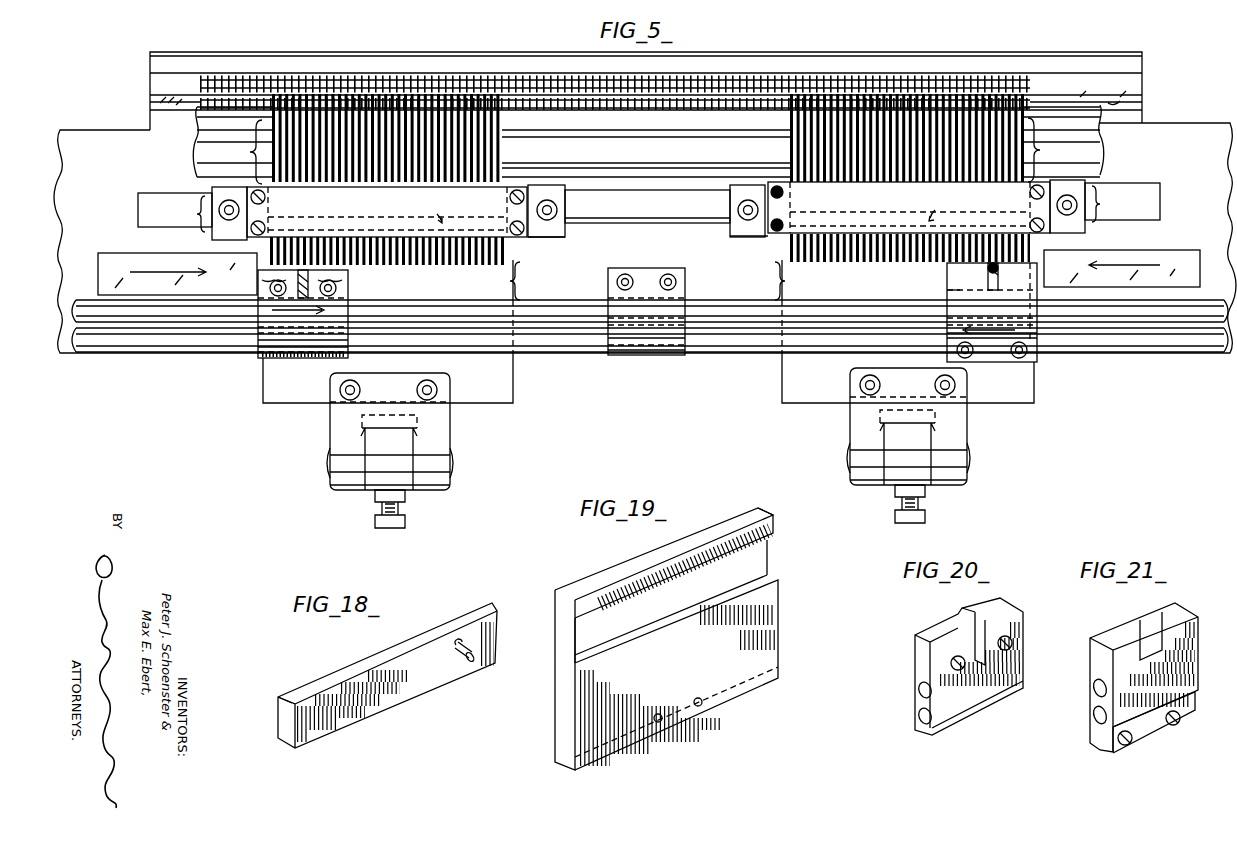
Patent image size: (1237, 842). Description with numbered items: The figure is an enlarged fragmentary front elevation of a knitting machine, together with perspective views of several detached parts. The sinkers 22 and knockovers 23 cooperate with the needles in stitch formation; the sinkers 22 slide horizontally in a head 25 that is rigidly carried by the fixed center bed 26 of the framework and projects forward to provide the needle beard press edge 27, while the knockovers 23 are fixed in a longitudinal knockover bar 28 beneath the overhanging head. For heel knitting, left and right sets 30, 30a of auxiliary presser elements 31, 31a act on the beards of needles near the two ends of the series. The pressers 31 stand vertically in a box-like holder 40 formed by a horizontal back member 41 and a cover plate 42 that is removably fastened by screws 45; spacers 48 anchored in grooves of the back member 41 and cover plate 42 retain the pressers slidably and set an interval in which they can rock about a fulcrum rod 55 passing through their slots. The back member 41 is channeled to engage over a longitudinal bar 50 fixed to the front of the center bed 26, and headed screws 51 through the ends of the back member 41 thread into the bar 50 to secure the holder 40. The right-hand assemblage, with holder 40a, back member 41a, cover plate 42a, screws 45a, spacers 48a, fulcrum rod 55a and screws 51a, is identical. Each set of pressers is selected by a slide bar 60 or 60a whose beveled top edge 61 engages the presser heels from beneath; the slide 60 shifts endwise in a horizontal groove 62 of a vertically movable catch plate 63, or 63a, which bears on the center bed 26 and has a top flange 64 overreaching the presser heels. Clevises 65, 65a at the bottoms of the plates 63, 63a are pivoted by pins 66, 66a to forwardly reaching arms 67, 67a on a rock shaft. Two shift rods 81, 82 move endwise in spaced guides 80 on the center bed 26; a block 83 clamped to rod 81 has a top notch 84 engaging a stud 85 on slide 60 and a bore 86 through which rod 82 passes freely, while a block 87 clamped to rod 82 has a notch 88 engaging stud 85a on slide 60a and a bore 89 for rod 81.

In FIG. 5, the sinkers 22 is at (374, 76).
In FIG. 5, the knockovers 23 is at (666, 113).
In FIG. 5, the head 25 is at (528, 54).
In FIG. 5, the center bed 26 is at (112, 130).
In FIG. 5, the needle beard press edge 27 is at (646, 109).
In FIG. 5, the knockover bar 28 is at (646, 153).
In FIG. 5, the left set of auxiliary presser elements 30 is at (232, 145).
In FIG. 5, the right set of auxiliary presser elements 30a is at (1064, 143).
In FIG. 5, the auxiliary presser element 31 is at (500, 166).
In FIG. 5, the auxiliary presser element 31a is at (790, 166).
In FIG. 5, the holder 40 is at (175, 212).
In FIG. 5, the holder 40a is at (1122, 202).
In FIG. 5, the back member 41 is at (566, 228).
In FIG. 5, the back member 41a is at (732, 228).
In FIG. 5, the cover plate 42 is at (387, 212).
In FIG. 5, the cover plate 42a is at (909, 207).
In FIG. 5, the screws 45 is at (264, 226).
In FIG. 5, the screws 45a is at (1030, 222).
In FIG. 5, the spacers 48 is at (270, 261).
In FIG. 5, the spacers 48a is at (1030, 261).
In FIG. 5, the longitudinal bar 50 is at (634, 223).
In FIG. 5, the headed screws 51 is at (228, 200).
In FIG. 5, the headed screws 51a is at (730, 210).
In FIG. 5, the fulcrum rod 55 is at (438, 208).
In FIG. 5, the fulcrum rod 55a is at (952, 206).
In FIG. 5, the slide bar 60 is at (120, 253).
In FIG. 18, the slide bar 60 is at (416, 690).
In FIG. 5, the slide bar 60a is at (1190, 250).
In FIG. 18, the beveled top edge 61 is at (290, 694).
In FIG. 5, the horizontal groove 62 is at (647, 307).
In FIG. 19, the horizontal groove 62 is at (787, 540).
In FIG. 5, the plate 63 is at (515, 392).
In FIG. 19, the plate 63 is at (795, 580).
In FIG. 5, the plate 63a is at (782, 391).
In FIG. 19, the flange 64 is at (774, 515).
In FIG. 5, the clevis 65 is at (330, 432).
In FIG. 5, the clevis 65a is at (967, 428).
In FIG. 5, the pin 66 is at (330, 462).
In FIG. 5, the pin 66a is at (967, 457).
In FIG. 5, the arm 67 is at (384, 474).
In FIG. 5, the arm 67a is at (905, 472).
In FIG. 5, the guides 80 is at (642, 355).
In FIG. 5, the shift rod 81 is at (586, 300).
In FIG. 5, the shift rod 82 is at (588, 342).
In FIG. 5, the block 83 is at (260, 346).
In FIG. 20, the block 83 is at (905, 696).
In FIG. 5, the notch 84 is at (258, 280).
In FIG. 20, the notch 84 is at (964, 618).
In FIG. 5, the stud 85 is at (321, 276).
In FIG. 18, the stud 85 is at (468, 666).
In FIG. 5, the stud 85a is at (996, 270).
In FIG. 5, the bore 86 is at (300, 356).
In FIG. 20, the bore 86 is at (924, 724).
In FIG. 5, the block 87 is at (1030, 356).
In FIG. 21, the block 87 is at (1085, 706).
In FIG. 5, the notch 88 is at (980, 279).
In FIG. 21, the notch 88 is at (1138, 620).
In FIG. 5, the bore 89 is at (948, 290).
In FIG. 21, the bore 89 is at (1094, 700).